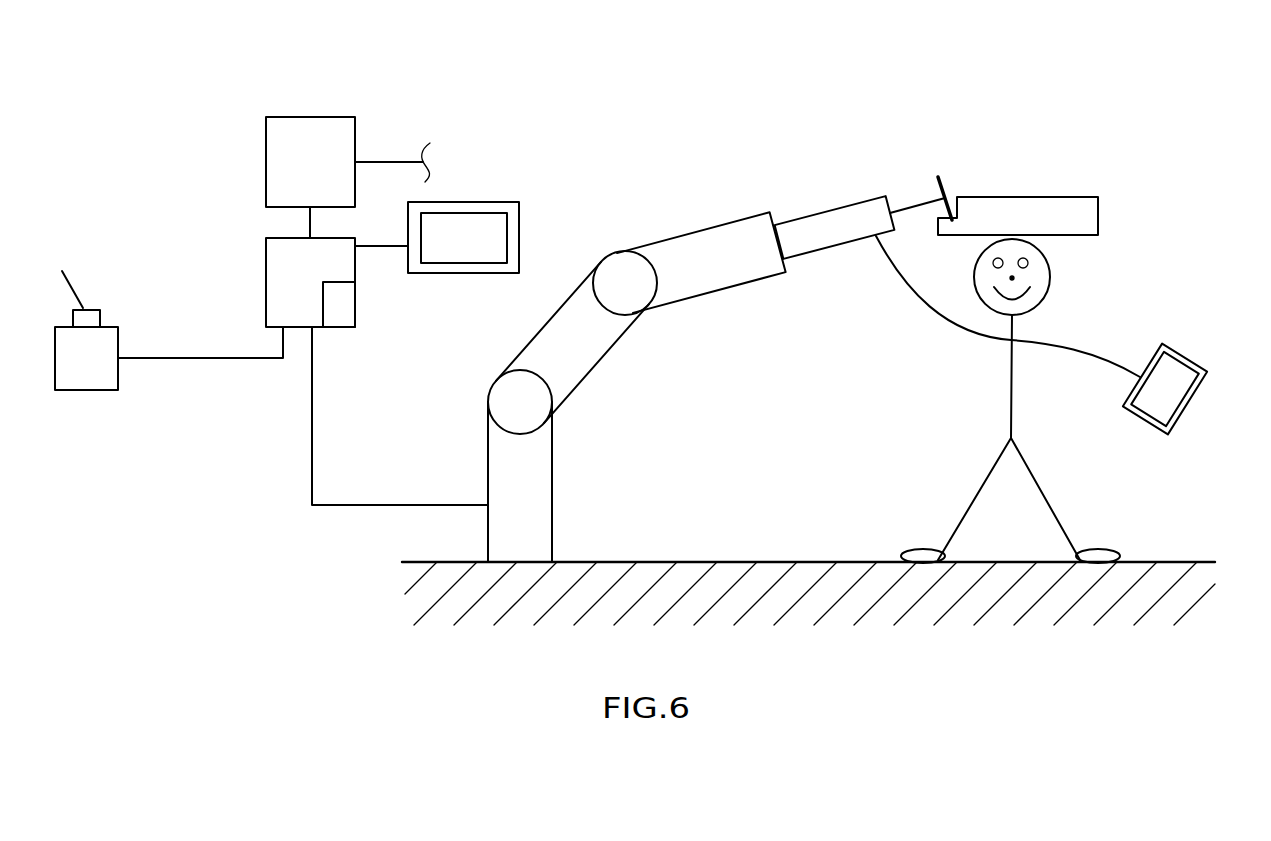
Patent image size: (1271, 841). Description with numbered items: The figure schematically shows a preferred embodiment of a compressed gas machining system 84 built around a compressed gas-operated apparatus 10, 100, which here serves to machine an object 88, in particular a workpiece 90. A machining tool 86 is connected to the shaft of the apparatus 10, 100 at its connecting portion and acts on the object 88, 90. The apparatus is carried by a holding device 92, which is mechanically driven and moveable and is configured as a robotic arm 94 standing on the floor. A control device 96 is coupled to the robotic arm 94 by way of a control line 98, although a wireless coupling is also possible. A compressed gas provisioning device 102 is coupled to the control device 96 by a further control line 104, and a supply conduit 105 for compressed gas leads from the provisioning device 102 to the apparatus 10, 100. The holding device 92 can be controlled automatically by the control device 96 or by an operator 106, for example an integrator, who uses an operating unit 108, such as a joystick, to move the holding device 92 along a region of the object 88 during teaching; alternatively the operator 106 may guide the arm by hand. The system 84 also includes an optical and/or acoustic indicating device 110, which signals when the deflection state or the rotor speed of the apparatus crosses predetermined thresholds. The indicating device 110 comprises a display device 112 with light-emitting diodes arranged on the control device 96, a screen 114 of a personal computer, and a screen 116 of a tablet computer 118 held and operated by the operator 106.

The compressed gas-operated apparatus 10 is at (868, 299).
The compressed gas machining system 84 is at (852, 128).
The machining tool 86 is at (945, 192).
The object 88 is at (1029, 172).
The workpiece 90 is at (1040, 196).
The holding device 92 is at (643, 333).
The robotic arm 94 is at (697, 255).
The control device 96 is at (293, 283).
The control line 98 is at (310, 410).
The compressed gas-operated apparatus 100 is at (850, 262).
The compressed gas provisioning device 102 is at (302, 182).
The control line 104 is at (310, 222).
The supply conduit 105 is at (388, 162).
The operator 106 is at (1082, 343).
The operating unit 108 is at (83, 381).
The indicating device 110 is at (318, 350).
The display device 112 is at (343, 297).
The screen 114 is at (470, 202).
The screen 116 is at (1188, 400).
The tablet computer 118 is at (1183, 358).